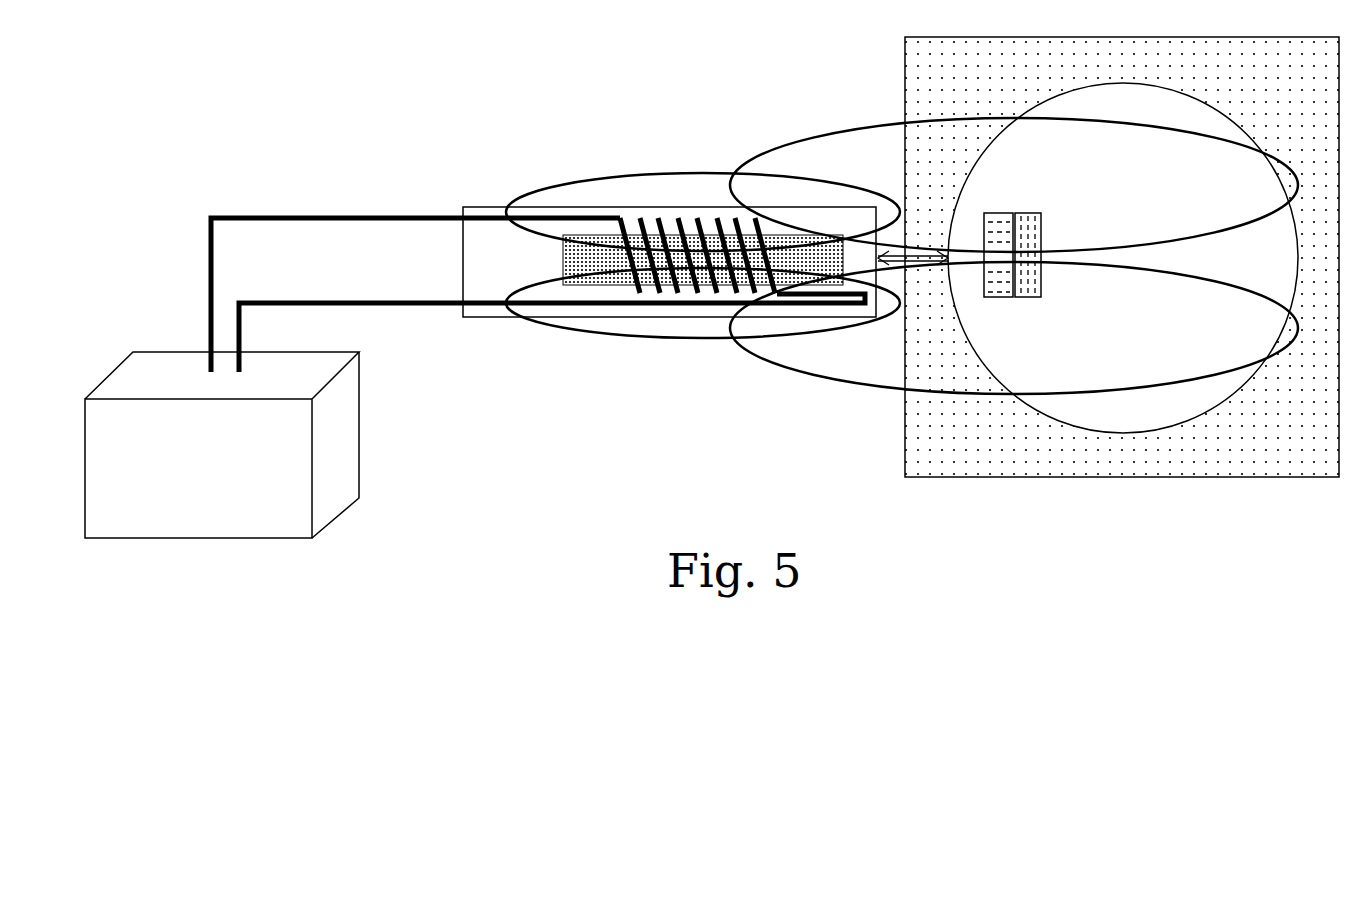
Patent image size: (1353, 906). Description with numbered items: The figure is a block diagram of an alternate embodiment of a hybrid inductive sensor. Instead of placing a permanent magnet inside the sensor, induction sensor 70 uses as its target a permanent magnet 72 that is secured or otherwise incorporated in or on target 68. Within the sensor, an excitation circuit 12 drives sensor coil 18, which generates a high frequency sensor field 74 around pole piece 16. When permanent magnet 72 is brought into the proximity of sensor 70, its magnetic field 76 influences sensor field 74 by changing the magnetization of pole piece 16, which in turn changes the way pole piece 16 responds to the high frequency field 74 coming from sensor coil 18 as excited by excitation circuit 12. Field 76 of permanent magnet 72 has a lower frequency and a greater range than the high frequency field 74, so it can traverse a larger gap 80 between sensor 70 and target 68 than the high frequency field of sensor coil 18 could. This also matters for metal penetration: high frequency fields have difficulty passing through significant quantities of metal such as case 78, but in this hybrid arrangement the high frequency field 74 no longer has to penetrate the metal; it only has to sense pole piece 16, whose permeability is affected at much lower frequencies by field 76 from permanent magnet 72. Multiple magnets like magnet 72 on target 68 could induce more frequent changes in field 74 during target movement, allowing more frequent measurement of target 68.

The excitation circuit 12 is at (475, 424).
The pole piece 16 is at (695, 316).
The sensor coil 18 is at (697, 199).
The target 68 is at (1107, 320).
The induction sensor 70 is at (669, 218).
The permanent magnet 72 is at (1012, 285).
The sensor field 74 is at (703, 296).
The magnetic field 76 is at (1014, 288).
The case 78 is at (1122, 299).
The gap 80 is at (902, 351).